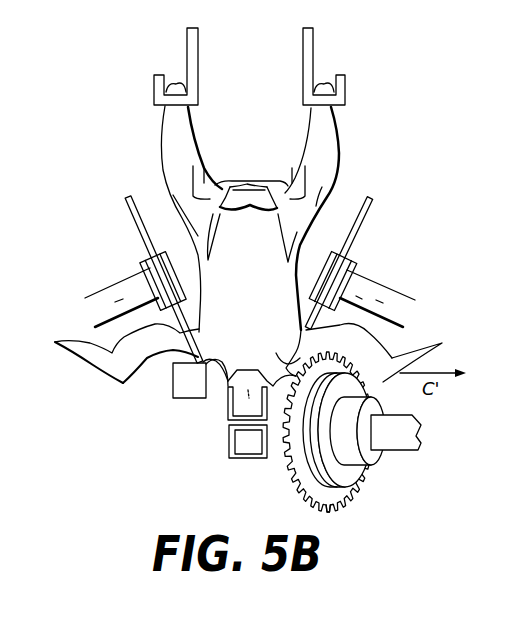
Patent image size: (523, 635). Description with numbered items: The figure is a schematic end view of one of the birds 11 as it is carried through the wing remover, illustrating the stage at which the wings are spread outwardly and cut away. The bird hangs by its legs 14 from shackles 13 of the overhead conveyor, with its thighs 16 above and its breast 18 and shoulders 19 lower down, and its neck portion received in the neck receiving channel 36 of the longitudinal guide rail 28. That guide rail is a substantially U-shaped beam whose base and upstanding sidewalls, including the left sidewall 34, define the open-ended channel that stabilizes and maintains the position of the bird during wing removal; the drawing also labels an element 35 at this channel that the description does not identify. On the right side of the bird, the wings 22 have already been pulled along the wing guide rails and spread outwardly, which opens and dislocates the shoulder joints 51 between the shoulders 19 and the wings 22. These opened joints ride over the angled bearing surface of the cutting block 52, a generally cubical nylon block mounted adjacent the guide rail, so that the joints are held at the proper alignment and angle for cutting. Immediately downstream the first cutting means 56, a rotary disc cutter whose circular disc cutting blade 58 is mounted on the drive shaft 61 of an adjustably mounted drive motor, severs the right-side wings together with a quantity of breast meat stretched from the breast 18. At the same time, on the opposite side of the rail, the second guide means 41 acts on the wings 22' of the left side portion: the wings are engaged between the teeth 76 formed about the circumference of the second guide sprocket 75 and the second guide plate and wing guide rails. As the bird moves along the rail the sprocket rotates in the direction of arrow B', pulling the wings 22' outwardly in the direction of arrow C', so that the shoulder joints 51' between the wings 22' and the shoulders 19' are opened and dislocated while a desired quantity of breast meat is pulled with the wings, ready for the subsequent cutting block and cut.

The birds 11 is at (352, 160).
The shackles 13 is at (301, 63).
The legs 14 is at (193, 115).
The thighs 16 is at (190, 152).
The breast 18 is at (264, 258).
The shoulders 19 is at (209, 343).
The shoulders 19' is at (327, 337).
The wings 22 is at (115, 360).
The wings 22' is at (426, 351).
The longitudinal guide rail 28 is at (226, 478).
The left sidewall 34 is at (228, 406).
The pin 35 is at (248, 390).
The neck receiving channel 36 is at (230, 445).
The second guide means 41 is at (297, 503).
The shoulder joints 51 is at (144, 388).
The shoulder joints 51' is at (262, 430).
The cutting block 52 is at (187, 398).
The first cutting means 56 is at (72, 295).
The disc cutting blade 58 is at (128, 212).
The drive shaft 61 is at (118, 293).
The second guide sprocket 75 is at (340, 507).
The teeth 76 is at (362, 488).